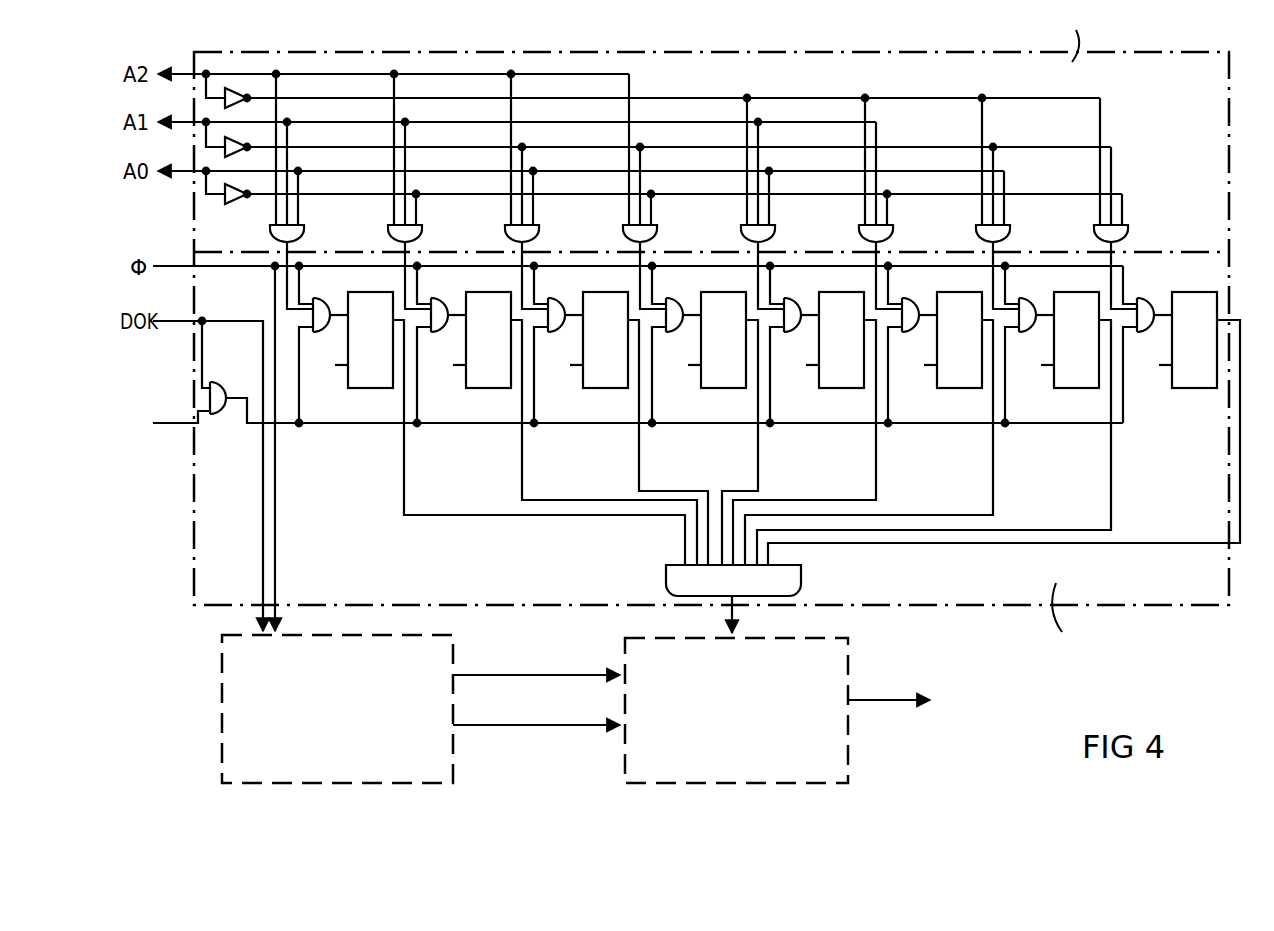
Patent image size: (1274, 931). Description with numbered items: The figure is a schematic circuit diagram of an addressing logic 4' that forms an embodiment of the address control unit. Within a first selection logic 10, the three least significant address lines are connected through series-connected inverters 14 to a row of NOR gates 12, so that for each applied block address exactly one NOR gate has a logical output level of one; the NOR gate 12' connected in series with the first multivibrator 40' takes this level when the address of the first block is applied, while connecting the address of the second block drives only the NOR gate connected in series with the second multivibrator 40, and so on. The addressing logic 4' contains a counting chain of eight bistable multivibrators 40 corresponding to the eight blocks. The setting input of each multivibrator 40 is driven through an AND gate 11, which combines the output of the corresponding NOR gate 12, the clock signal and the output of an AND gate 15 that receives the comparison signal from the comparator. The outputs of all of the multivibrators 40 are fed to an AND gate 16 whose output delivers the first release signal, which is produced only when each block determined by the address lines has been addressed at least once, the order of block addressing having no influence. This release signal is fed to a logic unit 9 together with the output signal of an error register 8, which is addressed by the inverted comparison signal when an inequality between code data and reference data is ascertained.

The addressing logic 4' is at (728, 363).
The error register 8 is at (421, 709).
The logic unit 9 is at (777, 710).
The first selection logic 10 is at (1222, 139).
The AND gate 11 is at (322, 300).
The NOR gate 12 is at (741, 160).
The NOR gate 12' is at (312, 160).
The inverters 14 is at (247, 150).
The AND gate 15 is at (215, 383).
The AND gate 16 is at (801, 578).
The bistable multivibrator 40 is at (838, 428).
The first multivibrator 40' is at (500, 428).